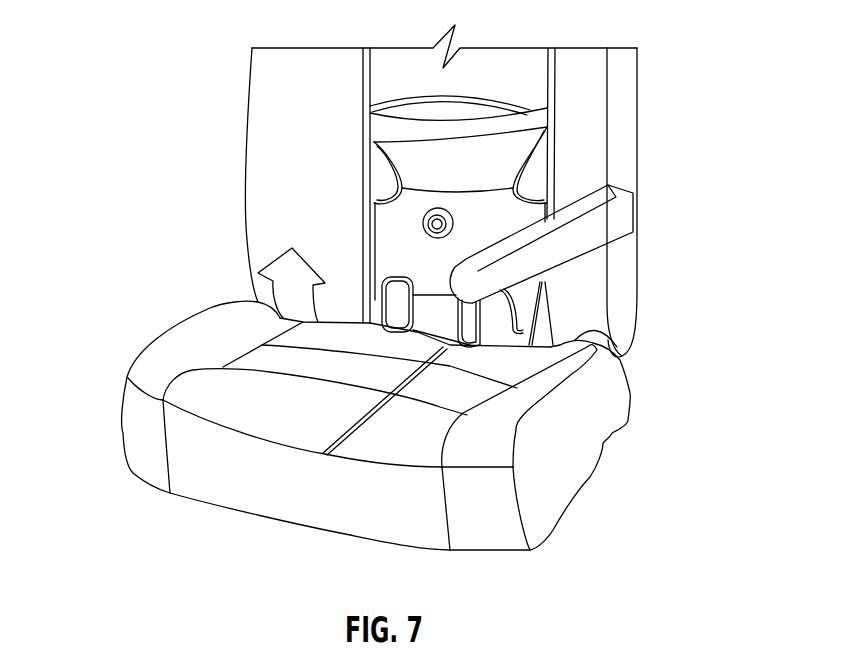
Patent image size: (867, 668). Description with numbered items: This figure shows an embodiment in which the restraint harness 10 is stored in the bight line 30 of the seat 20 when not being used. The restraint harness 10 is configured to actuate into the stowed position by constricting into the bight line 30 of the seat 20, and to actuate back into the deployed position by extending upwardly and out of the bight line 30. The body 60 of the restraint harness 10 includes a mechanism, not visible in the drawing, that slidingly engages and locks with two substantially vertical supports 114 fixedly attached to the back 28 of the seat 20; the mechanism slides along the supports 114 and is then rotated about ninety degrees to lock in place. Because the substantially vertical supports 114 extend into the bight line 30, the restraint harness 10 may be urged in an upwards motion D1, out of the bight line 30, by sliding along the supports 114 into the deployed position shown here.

The back 28 is at (134, 65).
The substantially vertical supports 114 is at (366, 62).
The restraint harness 10 is at (529, 139).
The body 60 is at (467, 177).
The upwards motion D1 is at (290, 302).
The bight line 30 is at (613, 336).
The seat 20 is at (445, 558).